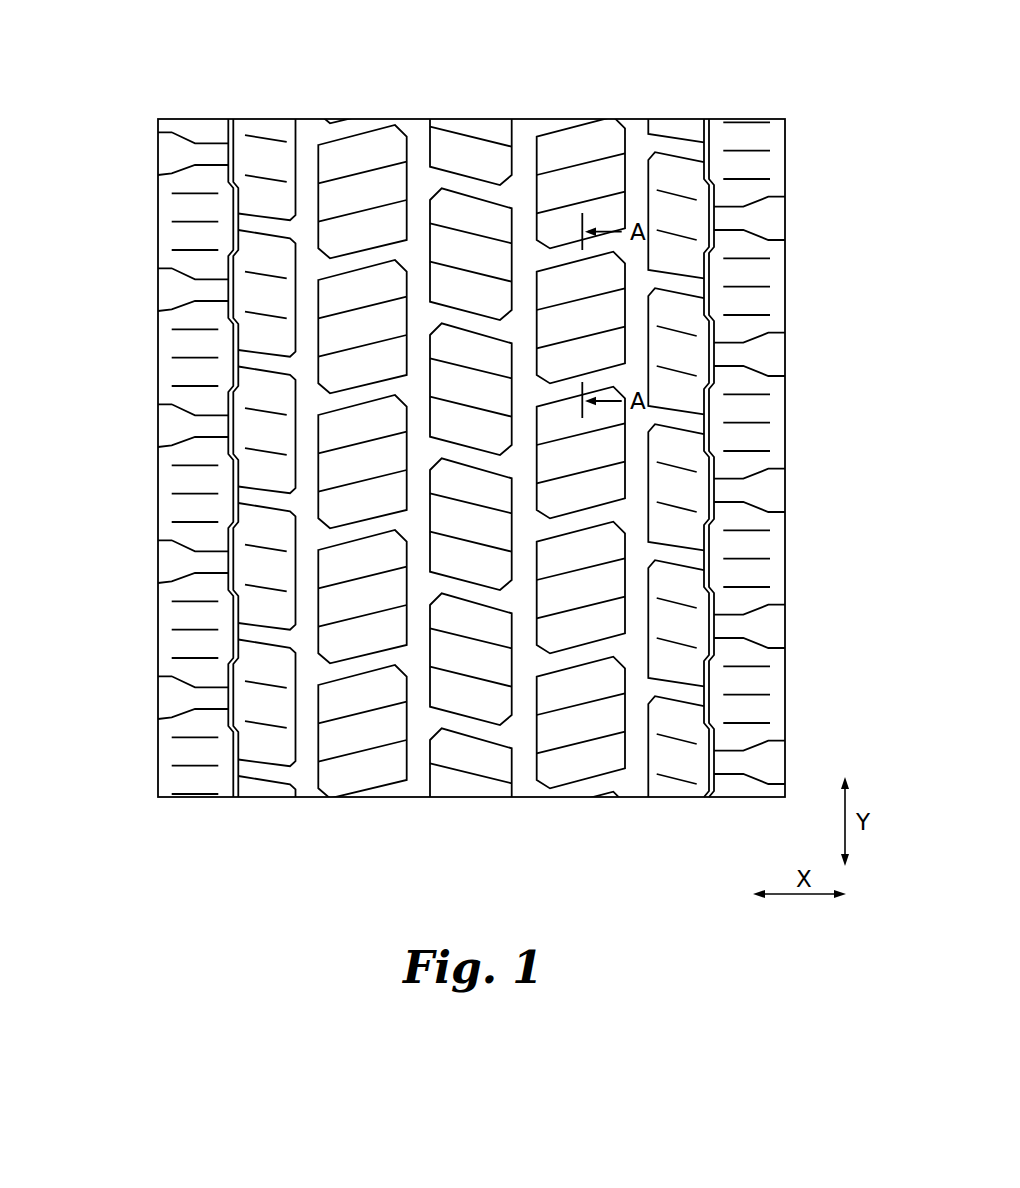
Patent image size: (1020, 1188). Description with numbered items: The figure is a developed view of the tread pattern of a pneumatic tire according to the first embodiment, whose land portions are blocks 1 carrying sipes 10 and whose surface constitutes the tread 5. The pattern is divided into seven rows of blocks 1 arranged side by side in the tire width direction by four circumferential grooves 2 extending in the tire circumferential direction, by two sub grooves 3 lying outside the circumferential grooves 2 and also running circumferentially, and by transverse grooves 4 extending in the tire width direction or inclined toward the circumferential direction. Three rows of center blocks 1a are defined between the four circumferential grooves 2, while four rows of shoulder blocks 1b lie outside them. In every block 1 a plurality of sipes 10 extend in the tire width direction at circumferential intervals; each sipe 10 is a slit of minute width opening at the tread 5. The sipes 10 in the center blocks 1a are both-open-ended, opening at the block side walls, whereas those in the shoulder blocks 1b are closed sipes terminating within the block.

The block 1 is at (470, 421).
The center block 1a is at (353, 163).
The shoulder block 1b is at (183, 178).
The circumferential groove 2 is at (307, 747).
The sub groove 3 is at (230, 166).
The transverse groove 4 is at (355, 533).
The tread 5 is at (600, 182).
The sipe 10 is at (568, 300).